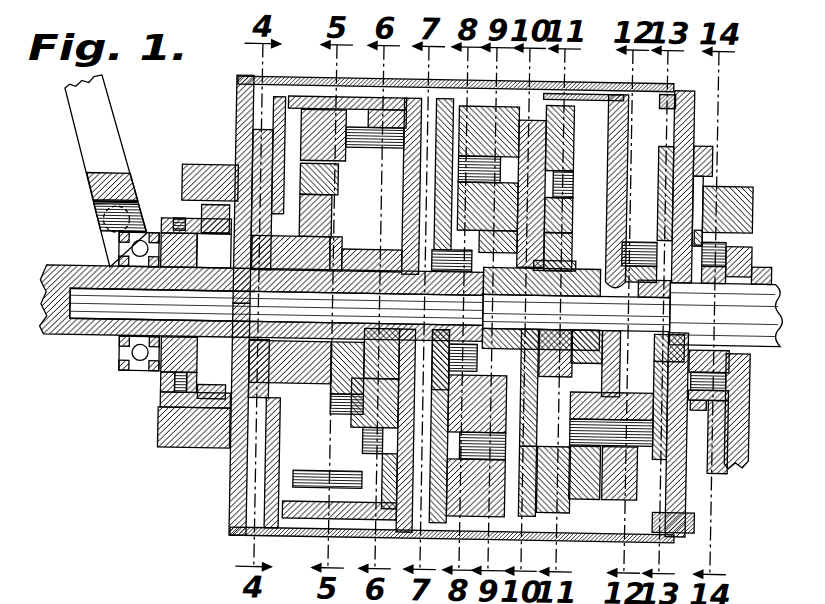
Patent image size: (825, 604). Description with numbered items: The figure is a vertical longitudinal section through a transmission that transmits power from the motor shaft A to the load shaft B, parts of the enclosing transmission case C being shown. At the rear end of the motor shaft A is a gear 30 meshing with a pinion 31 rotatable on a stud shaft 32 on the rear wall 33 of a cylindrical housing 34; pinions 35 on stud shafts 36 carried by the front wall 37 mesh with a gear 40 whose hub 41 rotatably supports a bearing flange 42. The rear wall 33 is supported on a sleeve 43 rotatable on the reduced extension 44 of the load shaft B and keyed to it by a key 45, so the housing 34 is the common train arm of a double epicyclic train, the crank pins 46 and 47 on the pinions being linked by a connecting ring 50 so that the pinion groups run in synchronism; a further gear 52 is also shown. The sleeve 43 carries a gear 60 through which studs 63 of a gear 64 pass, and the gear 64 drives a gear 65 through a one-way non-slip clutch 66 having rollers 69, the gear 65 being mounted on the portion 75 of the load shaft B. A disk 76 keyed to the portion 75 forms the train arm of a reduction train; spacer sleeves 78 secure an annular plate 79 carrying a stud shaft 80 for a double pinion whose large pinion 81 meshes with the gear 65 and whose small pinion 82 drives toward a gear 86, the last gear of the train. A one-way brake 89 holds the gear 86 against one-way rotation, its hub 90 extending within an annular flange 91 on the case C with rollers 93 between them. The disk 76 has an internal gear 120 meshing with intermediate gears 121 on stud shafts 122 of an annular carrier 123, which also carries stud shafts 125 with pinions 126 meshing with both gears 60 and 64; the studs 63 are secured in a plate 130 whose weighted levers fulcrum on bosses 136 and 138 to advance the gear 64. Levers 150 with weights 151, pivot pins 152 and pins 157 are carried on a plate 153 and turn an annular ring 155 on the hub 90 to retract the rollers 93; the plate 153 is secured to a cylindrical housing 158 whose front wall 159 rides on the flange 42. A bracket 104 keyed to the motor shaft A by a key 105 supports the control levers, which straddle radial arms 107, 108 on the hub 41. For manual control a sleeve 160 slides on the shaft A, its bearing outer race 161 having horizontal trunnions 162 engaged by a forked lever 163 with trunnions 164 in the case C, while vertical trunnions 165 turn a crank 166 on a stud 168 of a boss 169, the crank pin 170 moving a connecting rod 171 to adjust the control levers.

The gear 30 is at (378, 263).
The pinion 31 is at (380, 497).
The stud shaft 32 is at (372, 452).
The rear wall 33 is at (410, 220).
The cylindrical housing 34 is at (355, 100).
The pinion 35 is at (318, 140).
The stud shaft 36 is at (330, 212).
The front wall 37 is at (289, 490).
The gear 40 is at (330, 242).
The hub 41 is at (312, 382).
The bearing flange 42 is at (330, 396).
The sleeve 43 is at (450, 360).
The reduced extension 44 is at (276, 306).
The key 45 is at (444, 259).
The crank pin 46 is at (371, 150).
The crank pin 47 is at (331, 402).
The connecting ring 50 is at (345, 243).
The gear 52 is at (527, 481).
The gear 60 is at (456, 242).
The stud 63 is at (431, 360).
The gear 64 is at (505, 383).
The gear 65 is at (574, 258).
The one-way non-slip clutch 66 is at (571, 242).
The rollers 69 is at (571, 212).
The portion of load shaft 75 is at (576, 309).
The disk 76 is at (610, 190).
The spacer sleeve 78 is at (640, 248).
The annular plate 79 is at (660, 190).
The stud shaft 80 is at (640, 470).
The large diameter pinion 81 is at (593, 500).
The small diameter pinion 82 is at (640, 399).
The gear 86 is at (640, 350).
The one-way brake 89 is at (722, 258).
The hub 90 is at (732, 378).
The annular flange 91 is at (716, 223).
The rollers 93 is at (718, 247).
The bracket 104 is at (240, 101).
The key 105 is at (238, 268).
The radial arm 107 is at (262, 141).
The radial arm 108 is at (252, 483).
The internal gear 120 is at (580, 102).
The intermediate gear 121 is at (576, 130).
The stud shaft 122 is at (571, 181).
The annular carrier 123 is at (548, 124).
The stud shaft 125 is at (478, 108).
The pinion 126 is at (508, 112).
The plate 130 is at (441, 115).
The boss 136 is at (414, 532).
The boss 138 is at (414, 114).
The lever 150 is at (700, 191).
The weight 151 is at (700, 156).
The pivot pin 152 is at (652, 262).
The plate 153 is at (692, 121).
The annular ring 155 is at (706, 412).
The pin 157 is at (705, 206).
The cylindrical housing 158 is at (613, 86).
The front wall 159 is at (283, 84).
The sleeve 160 is at (163, 380).
The outer race 161 is at (120, 352).
The horizontal trunnion 162 is at (75, 347).
The forked lever 163 is at (90, 156).
The trunnion 164 is at (102, 230).
The vertical trunnion 165 is at (174, 220).
The crank 166 is at (176, 392).
The stud 168 is at (200, 397).
The boss 169 is at (200, 168).
The crank pin 170 is at (200, 305).
The connecting rod 171 is at (220, 205).
The motor shaft A is at (48, 263).
The load shaft B is at (726, 315).
The transmission case C is at (731, 458).